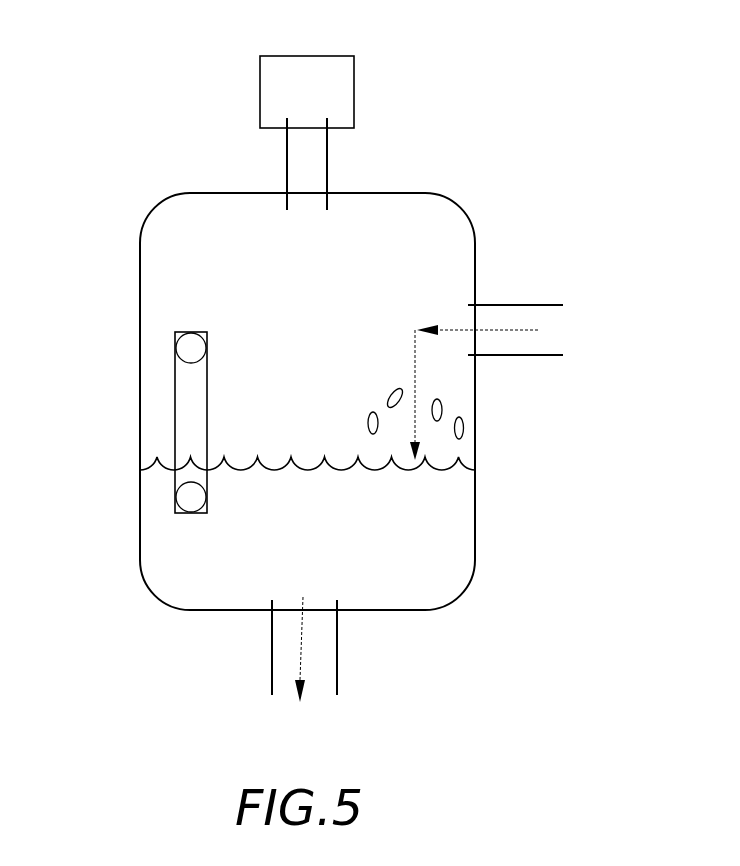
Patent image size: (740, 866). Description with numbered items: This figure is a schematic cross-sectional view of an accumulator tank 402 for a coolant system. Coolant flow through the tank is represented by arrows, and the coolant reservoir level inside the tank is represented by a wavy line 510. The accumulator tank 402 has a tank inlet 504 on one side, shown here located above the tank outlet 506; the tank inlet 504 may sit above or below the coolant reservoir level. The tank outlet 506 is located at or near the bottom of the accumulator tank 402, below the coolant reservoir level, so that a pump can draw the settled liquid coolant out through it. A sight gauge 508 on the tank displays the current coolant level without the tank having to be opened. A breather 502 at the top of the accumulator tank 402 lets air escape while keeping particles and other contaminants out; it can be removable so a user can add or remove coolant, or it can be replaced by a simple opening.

The accumulator tank 402 is at (172, 243).
The breather 502 is at (288, 96).
The tank inlet 504 is at (513, 318).
The tank outlet 506 is at (328, 680).
The sight gauge 508 is at (188, 470).
The wavy line 510 is at (442, 468).